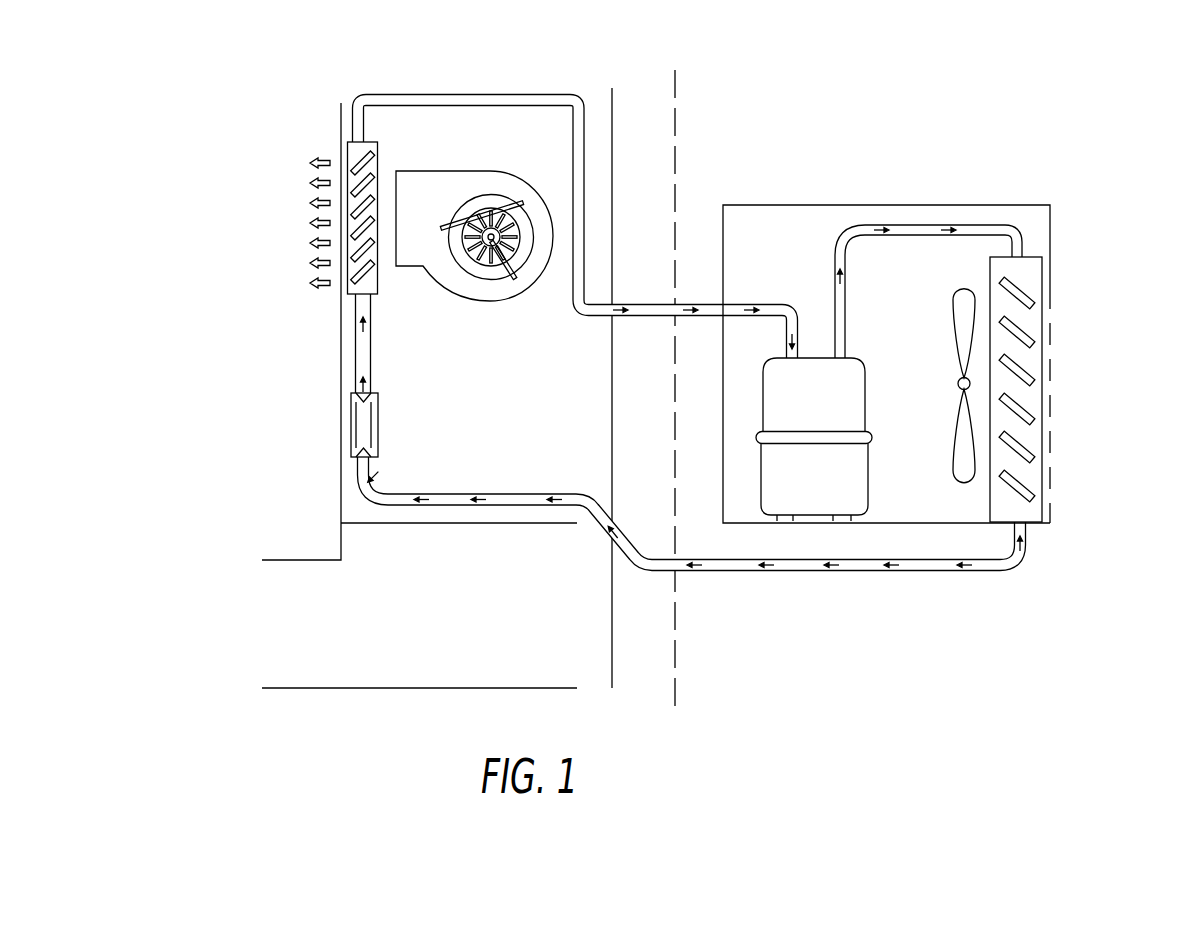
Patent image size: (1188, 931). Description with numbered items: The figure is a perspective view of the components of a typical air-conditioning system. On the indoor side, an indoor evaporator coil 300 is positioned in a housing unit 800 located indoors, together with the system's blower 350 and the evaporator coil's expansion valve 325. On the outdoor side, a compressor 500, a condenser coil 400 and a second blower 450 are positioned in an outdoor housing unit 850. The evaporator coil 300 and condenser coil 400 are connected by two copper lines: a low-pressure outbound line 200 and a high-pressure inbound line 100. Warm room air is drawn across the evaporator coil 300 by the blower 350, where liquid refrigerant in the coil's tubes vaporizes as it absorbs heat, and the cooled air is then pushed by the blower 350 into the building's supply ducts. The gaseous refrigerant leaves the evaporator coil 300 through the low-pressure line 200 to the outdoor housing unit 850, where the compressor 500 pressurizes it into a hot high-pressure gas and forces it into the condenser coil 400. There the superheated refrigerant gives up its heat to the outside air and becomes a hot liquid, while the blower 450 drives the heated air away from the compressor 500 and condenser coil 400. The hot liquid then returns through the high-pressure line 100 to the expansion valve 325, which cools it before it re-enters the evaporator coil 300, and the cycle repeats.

The high-pressure copper line 100 is at (638, 568).
The low-pressure outbound copper line 200 is at (654, 304).
The indoor evaporator coil 300 is at (346, 153).
The expansion valve 325 is at (357, 426).
The blower 350 is at (430, 193).
The condenser coil 400 is at (1017, 393).
The blower 450 is at (965, 457).
The compressor 500 is at (820, 488).
The housing unit 800 is at (320, 519).
The outdoor housing unit 850 is at (1036, 166).